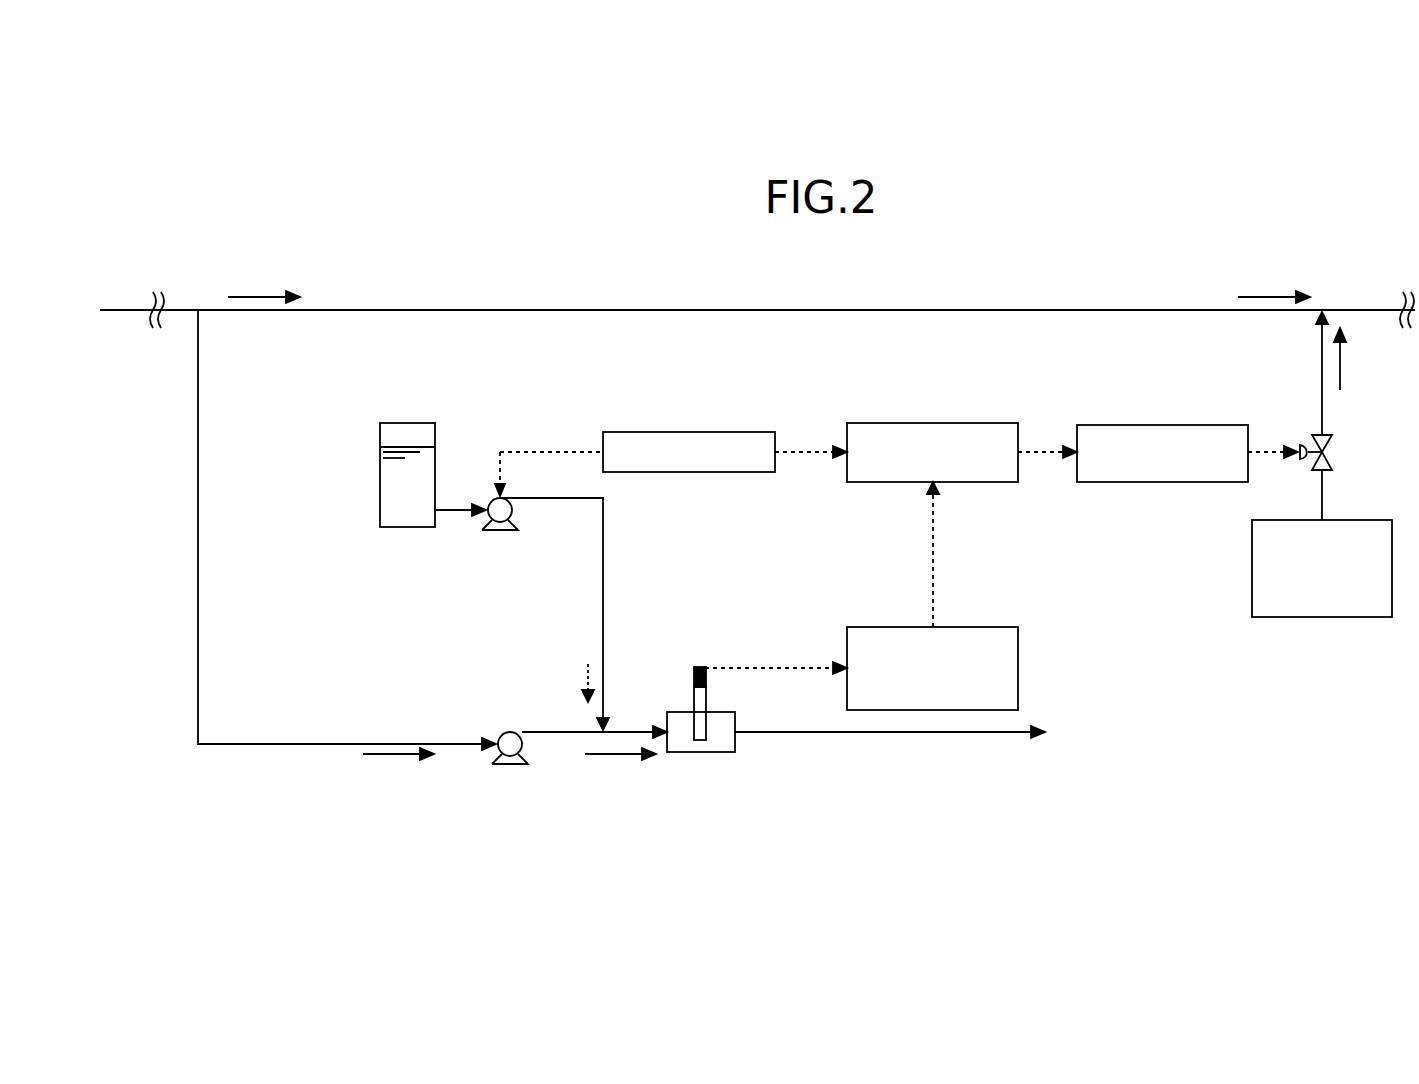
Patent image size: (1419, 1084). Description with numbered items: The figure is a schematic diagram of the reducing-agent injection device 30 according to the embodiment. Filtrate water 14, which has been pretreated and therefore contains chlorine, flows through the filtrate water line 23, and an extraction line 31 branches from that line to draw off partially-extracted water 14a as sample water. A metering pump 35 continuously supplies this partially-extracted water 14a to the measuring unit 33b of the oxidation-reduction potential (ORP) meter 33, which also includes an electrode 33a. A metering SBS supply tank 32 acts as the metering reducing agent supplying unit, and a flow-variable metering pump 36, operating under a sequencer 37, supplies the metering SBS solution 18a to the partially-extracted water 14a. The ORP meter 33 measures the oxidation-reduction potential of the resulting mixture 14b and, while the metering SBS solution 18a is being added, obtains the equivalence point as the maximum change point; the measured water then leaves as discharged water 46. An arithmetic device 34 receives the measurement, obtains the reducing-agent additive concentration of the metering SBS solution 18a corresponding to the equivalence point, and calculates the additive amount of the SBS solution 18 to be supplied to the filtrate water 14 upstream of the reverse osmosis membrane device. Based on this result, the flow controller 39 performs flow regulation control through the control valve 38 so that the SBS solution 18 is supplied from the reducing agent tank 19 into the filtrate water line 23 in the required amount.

The filtrate water 14 is at (254, 296).
The filtrate water line 23 is at (413, 309).
The extraction line 31 is at (200, 381).
The metering SBS supply tank 32 is at (380, 474).
The metering SBS solution 18a is at (416, 461).
The reducing-agent injection device 30 is at (517, 410).
The flow-variable metering pump 36 is at (502, 535).
The sequencer 37 is at (728, 432).
The arithmetic device 34 is at (972, 423).
The flow controller 39 is at (1202, 425).
The control valve 38 is at (1304, 451).
The SBS solution 18 is at (1341, 356).
The reducing agent tank 19 is at (1345, 520).
The oxidation-reduction potential (ORP) meter 33 is at (974, 628).
The electrode 33a is at (702, 667).
The measuring unit 33b is at (702, 752).
The metering pump 35 is at (512, 766).
The partially-extracted water 14a is at (400, 760).
The mixture 14b is at (622, 760).
The discharged water 46 is at (907, 733).